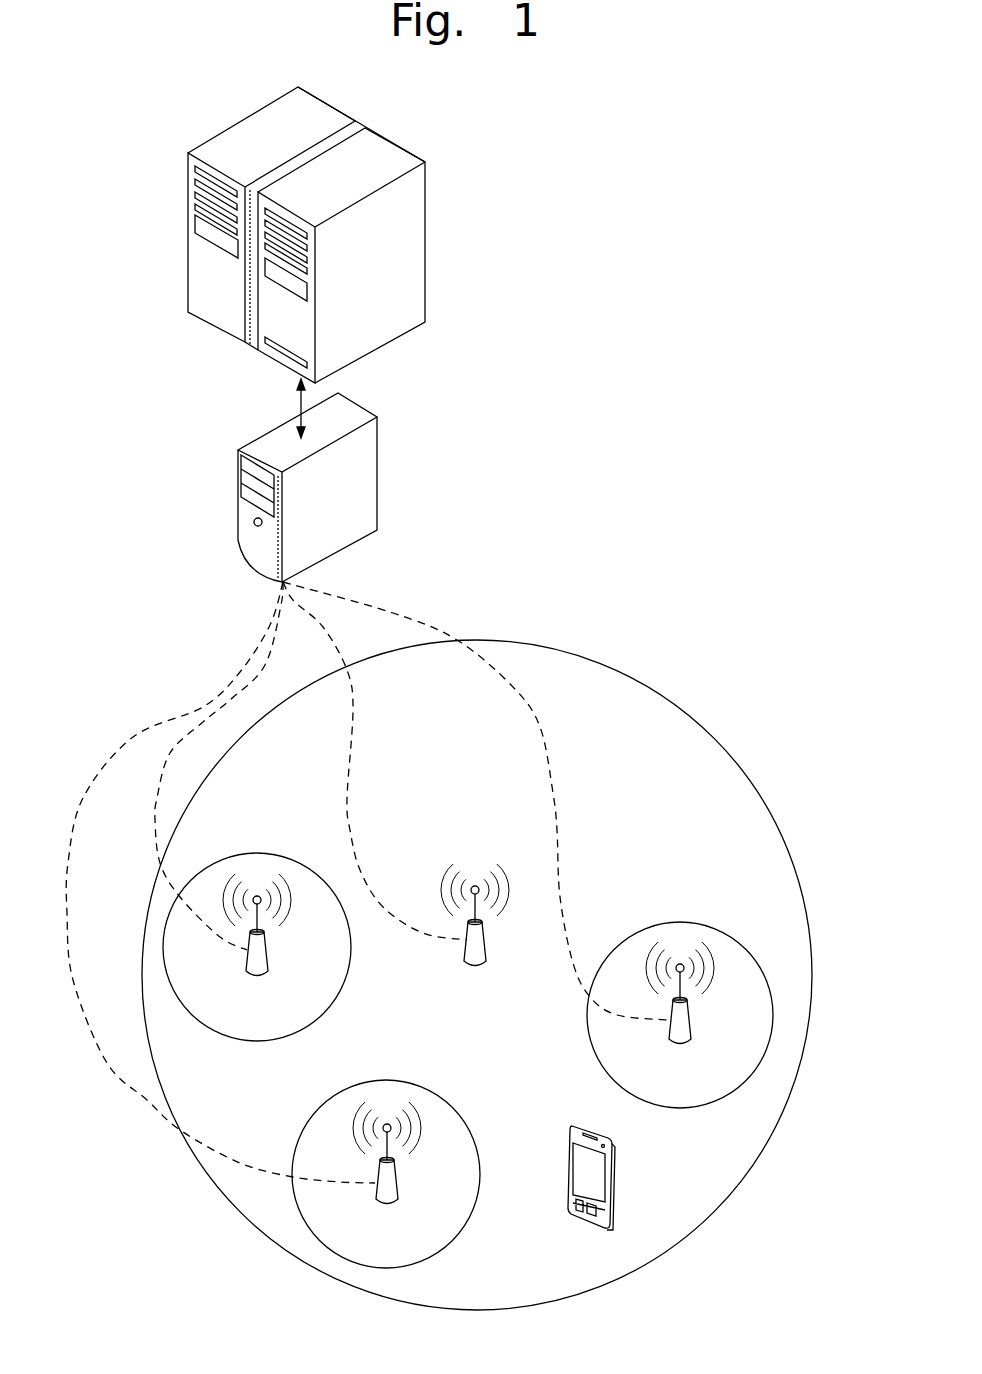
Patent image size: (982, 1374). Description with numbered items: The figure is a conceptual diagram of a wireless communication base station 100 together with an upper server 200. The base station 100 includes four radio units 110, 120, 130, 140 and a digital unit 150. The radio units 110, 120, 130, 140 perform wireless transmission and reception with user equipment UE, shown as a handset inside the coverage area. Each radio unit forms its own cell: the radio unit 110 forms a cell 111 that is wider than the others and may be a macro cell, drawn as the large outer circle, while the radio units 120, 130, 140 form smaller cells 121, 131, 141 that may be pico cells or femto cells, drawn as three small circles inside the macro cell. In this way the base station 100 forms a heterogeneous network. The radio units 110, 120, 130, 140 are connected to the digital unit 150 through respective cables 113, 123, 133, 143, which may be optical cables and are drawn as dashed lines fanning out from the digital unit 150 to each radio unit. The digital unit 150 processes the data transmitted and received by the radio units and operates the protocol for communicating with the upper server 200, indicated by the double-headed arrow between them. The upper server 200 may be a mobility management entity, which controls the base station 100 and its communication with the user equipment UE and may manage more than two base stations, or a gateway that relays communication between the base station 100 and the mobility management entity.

The wireless communication base station 100 is at (538, 497).
The radio unit 110 is at (475, 969).
The cell 111 is at (578, 650).
The cable 113 is at (323, 630).
The radio unit 120 is at (690, 1020).
The cell 121 is at (693, 920).
The cable 123 is at (380, 607).
The radio unit 130 is at (267, 957).
The cell 131 is at (257, 852).
The cable 133 is at (203, 720).
The radio unit 140 is at (395, 1183).
The cell 141 is at (387, 1078).
The cable 143 is at (130, 733).
The digital unit 150 is at (363, 488).
The upper server 200 is at (413, 247).
The user equipment UE is at (580, 1123).